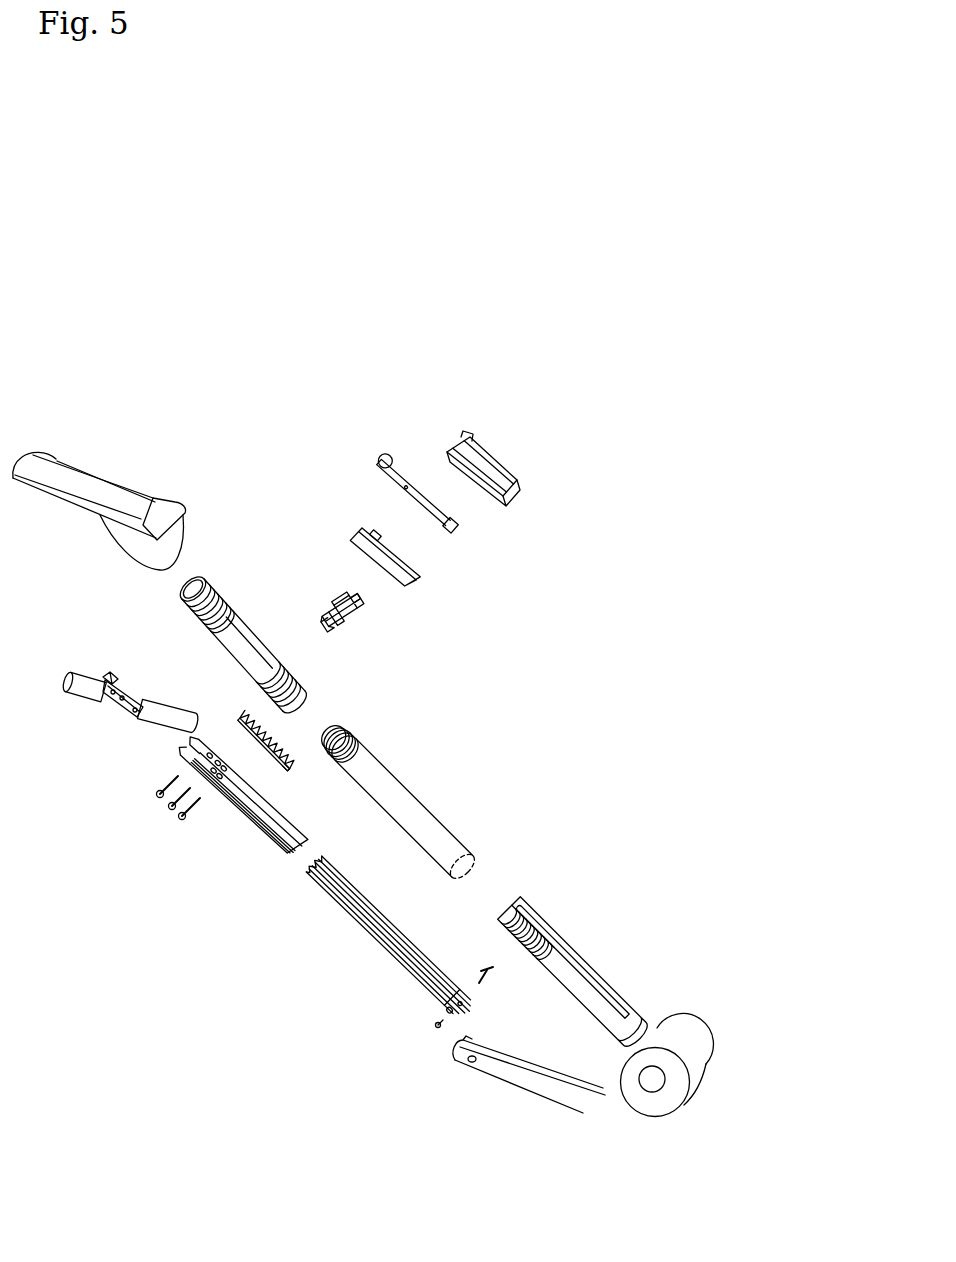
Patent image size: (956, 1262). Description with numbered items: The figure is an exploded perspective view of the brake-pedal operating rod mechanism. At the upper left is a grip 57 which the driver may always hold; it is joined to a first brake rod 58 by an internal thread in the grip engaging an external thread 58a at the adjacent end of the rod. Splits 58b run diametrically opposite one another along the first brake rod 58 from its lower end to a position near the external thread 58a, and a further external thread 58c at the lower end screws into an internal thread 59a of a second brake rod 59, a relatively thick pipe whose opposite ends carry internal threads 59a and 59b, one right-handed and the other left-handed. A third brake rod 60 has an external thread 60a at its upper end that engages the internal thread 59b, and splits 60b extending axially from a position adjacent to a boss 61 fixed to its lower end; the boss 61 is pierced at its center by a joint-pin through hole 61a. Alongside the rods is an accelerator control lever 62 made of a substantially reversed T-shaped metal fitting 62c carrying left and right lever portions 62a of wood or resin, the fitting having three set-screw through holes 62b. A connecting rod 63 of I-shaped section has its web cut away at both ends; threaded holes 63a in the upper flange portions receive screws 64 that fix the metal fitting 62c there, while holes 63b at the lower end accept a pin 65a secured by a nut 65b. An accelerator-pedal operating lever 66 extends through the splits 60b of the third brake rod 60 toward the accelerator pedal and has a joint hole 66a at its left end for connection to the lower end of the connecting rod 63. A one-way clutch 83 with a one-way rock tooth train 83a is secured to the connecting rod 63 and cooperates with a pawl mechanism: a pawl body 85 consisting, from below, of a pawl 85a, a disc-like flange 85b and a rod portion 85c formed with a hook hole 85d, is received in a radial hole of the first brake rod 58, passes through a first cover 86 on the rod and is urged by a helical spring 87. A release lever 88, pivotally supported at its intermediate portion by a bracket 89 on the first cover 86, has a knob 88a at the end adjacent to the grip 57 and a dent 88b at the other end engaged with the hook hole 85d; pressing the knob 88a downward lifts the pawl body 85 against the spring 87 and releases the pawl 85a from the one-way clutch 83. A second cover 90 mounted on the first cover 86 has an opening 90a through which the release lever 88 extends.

The grip 57 is at (92, 472).
The first brake rod 58 is at (230, 612).
The external thread 58a is at (220, 597).
The splits 58b is at (248, 662).
The external thread 58c is at (270, 692).
The second brake rod 59 is at (432, 797).
The internal thread 59a is at (345, 726).
The internal thread 59b is at (477, 850).
The third brake rod 60 is at (601, 950).
The external thread 60a is at (528, 906).
The splits 60b is at (622, 998).
The boss 61 is at (689, 1067).
The joint-pin through hole 61a is at (652, 1080).
The accelerator control lever 62 is at (107, 709).
The lever portions 62a is at (84, 688).
The set-screw through holes 62b is at (113, 715).
The metal fitting 62c is at (117, 704).
The connecting rod 63 is at (326, 876).
The threaded holes 63a is at (213, 760).
The holes 63b is at (462, 1003).
The screws 64 is at (182, 821).
The pin 65a is at (489, 983).
The nut 65b is at (437, 1028).
The accelerator-pedal operating lever 66 is at (526, 1114).
The joint hole 66a is at (471, 1068).
The one-way clutch 83 is at (305, 785).
The one-way rock tooth train 83a is at (290, 753).
The pawl body 85 is at (391, 620).
The pawl 85a is at (329, 630).
The disc-like flange 85b is at (345, 628).
The rod portion 85c is at (365, 604).
The hook hole 85d is at (346, 598).
The first cover 86 is at (417, 580).
The helical spring 87 is at (330, 604).
The release lever 88 is at (441, 461).
The knob 88a is at (377, 455).
The dent 88b is at (458, 530).
The bracket 89 is at (378, 531).
The second cover 90 is at (527, 444).
The opening 90a is at (473, 437).